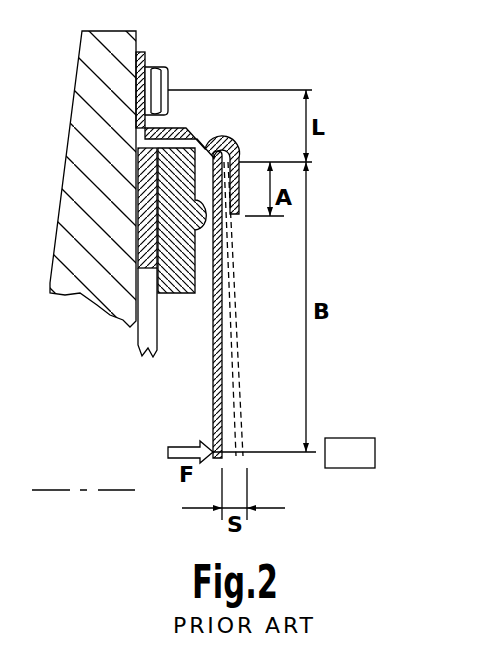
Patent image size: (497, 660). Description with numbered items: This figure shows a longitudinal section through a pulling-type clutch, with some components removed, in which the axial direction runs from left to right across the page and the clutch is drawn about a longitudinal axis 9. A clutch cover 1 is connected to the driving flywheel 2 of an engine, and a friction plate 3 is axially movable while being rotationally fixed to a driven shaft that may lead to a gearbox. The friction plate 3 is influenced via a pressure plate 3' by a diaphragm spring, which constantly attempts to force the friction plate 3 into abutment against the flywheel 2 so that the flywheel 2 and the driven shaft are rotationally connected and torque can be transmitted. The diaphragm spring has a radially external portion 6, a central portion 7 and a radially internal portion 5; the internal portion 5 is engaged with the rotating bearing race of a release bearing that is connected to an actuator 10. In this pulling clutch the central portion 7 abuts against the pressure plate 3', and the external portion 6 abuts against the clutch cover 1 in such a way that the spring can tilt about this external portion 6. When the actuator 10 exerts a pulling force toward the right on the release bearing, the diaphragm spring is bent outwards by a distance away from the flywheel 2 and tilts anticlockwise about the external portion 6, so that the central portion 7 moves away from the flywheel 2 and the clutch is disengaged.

The clutch cover 1 is at (186, 127).
The driving flywheel 2 is at (77, 178).
The friction plate 3 is at (115, 259).
The pressure plate 3' is at (183, 258).
The radially internal portion 5 is at (212, 443).
The radially external portion 6 is at (205, 141).
The central portion 7 is at (228, 248).
The longitudinal axis 9 is at (52, 488).
The actuator 10 is at (350, 438).